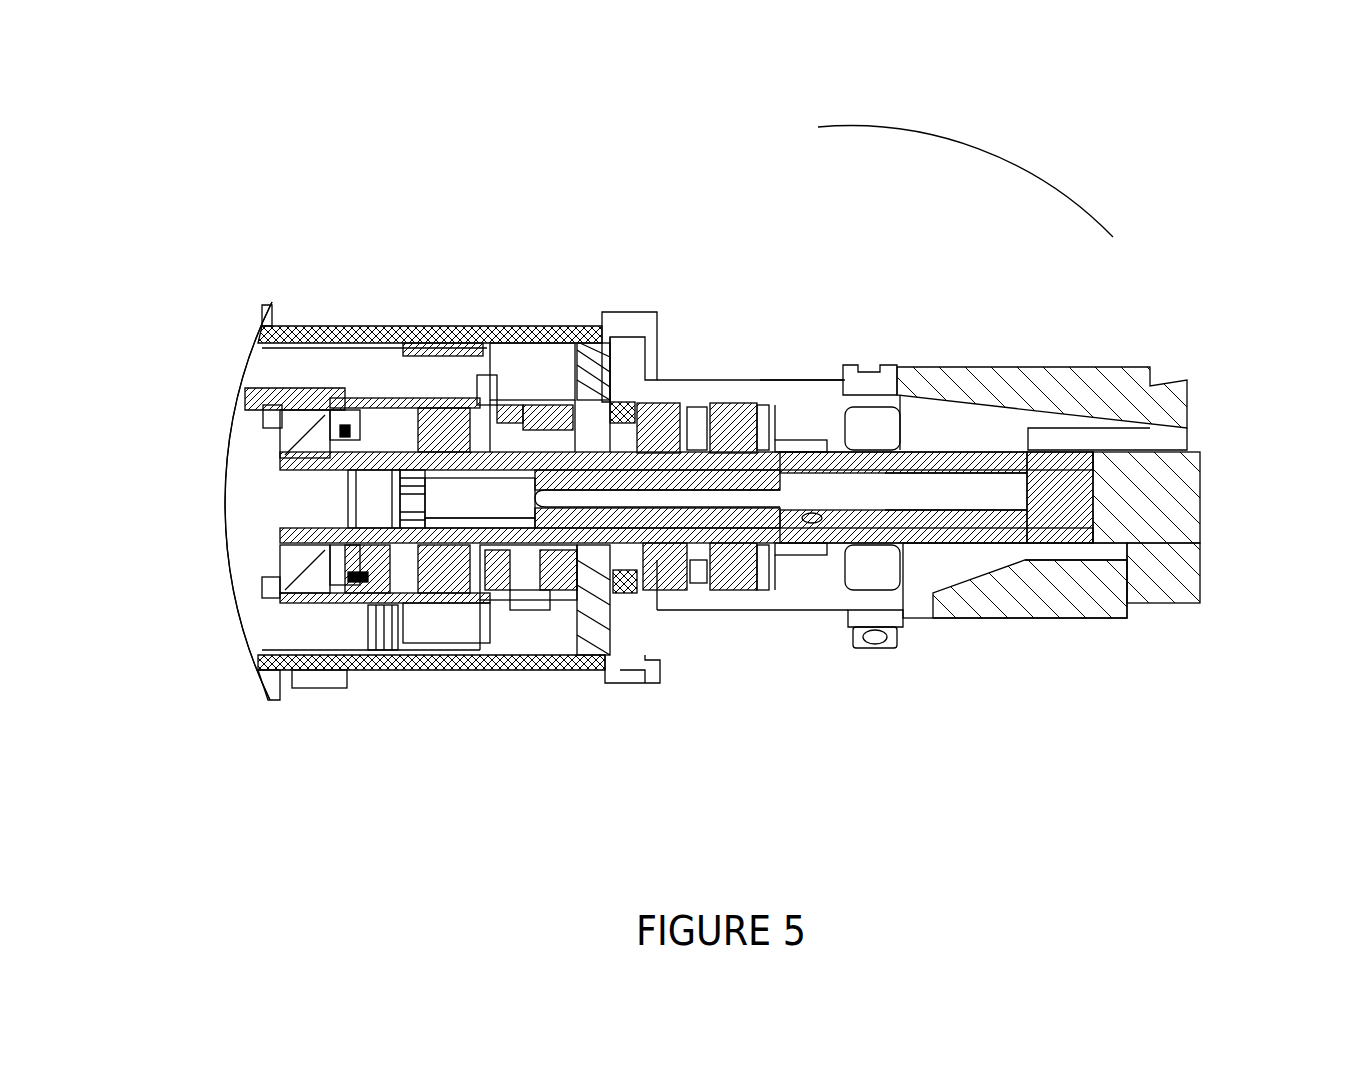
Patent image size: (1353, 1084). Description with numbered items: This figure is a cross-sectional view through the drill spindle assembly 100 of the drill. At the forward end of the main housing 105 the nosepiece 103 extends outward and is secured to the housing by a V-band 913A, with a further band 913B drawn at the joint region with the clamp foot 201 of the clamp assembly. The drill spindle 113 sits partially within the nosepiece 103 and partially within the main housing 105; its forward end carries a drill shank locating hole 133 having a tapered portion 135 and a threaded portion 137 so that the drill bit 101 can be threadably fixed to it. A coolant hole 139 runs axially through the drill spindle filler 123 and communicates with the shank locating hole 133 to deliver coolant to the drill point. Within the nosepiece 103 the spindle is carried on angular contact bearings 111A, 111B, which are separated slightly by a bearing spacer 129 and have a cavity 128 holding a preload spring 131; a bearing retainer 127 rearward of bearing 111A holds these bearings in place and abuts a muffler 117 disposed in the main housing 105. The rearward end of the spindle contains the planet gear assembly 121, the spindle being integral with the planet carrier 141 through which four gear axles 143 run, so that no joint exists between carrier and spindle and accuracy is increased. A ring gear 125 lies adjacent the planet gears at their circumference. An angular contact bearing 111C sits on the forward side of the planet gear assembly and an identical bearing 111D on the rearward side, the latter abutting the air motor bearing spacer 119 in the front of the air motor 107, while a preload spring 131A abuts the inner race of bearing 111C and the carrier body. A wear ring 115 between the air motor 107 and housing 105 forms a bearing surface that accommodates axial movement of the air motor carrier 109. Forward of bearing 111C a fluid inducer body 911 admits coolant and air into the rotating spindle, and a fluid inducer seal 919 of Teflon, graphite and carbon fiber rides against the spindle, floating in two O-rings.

The drill spindle assembly 100 is at (965, 146).
The drill bit 101 is at (1206, 516).
The nosepiece 103 is at (804, 331).
The main housing 105 is at (385, 279).
The air motor 107 is at (187, 501).
The air motor carrier 109 is at (237, 358).
The angular contact bearing 111A is at (686, 374).
The angular contact bearing 111B is at (804, 421).
The angular contact bearing 111C is at (424, 666).
The angular contact bearing 111D is at (307, 611).
The drill spindle 113 is at (388, 688).
The wear ring 115 is at (461, 308).
The muffler 117 is at (547, 273).
The air motor bearing spacer 119 is at (310, 591).
The planet gear assembly 121 is at (236, 650).
The drill spindle filler 123 is at (561, 645).
The ring gear 125 is at (405, 378).
The bearing retainer 127 is at (627, 363).
The cavity 128 is at (778, 526).
The bearing spacer 129 is at (725, 385).
The preload spring 131 is at (760, 405).
The preload spring 131A is at (290, 663).
The drill shank locating hole 133 is at (917, 589).
The tapered portion 135 is at (1080, 588).
The threaded portion 137 is at (964, 608).
The coolant hole 139 is at (686, 597).
The planet carrier 141 is at (239, 413).
The gear axles 143 is at (206, 430).
The clamp foot 201 is at (1042, 449).
The fluid inducer body 911 is at (467, 696).
The V-band 913A is at (592, 732).
The mounting collar 913B is at (909, 474).
The fluid inducer seal 919 is at (481, 715).